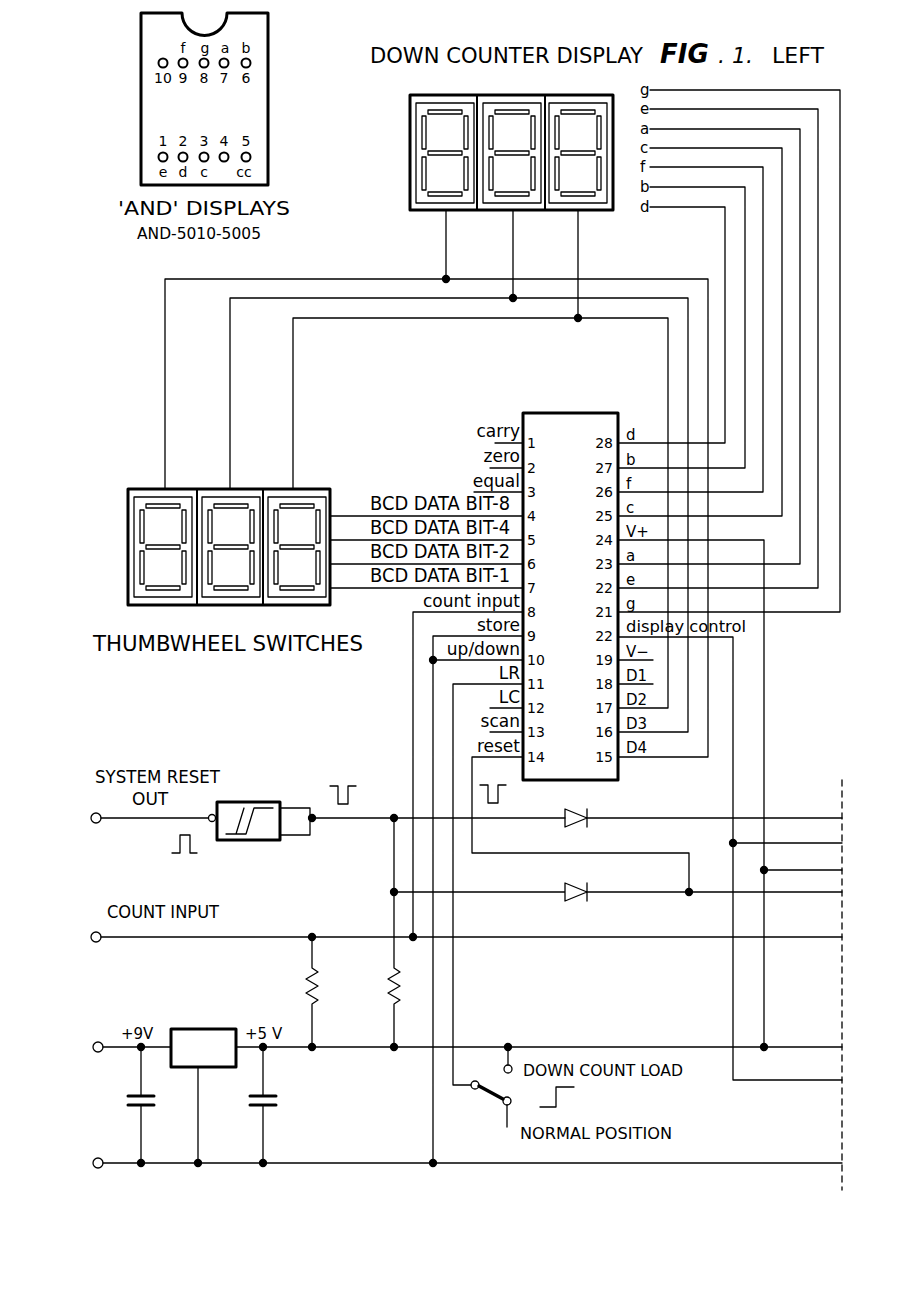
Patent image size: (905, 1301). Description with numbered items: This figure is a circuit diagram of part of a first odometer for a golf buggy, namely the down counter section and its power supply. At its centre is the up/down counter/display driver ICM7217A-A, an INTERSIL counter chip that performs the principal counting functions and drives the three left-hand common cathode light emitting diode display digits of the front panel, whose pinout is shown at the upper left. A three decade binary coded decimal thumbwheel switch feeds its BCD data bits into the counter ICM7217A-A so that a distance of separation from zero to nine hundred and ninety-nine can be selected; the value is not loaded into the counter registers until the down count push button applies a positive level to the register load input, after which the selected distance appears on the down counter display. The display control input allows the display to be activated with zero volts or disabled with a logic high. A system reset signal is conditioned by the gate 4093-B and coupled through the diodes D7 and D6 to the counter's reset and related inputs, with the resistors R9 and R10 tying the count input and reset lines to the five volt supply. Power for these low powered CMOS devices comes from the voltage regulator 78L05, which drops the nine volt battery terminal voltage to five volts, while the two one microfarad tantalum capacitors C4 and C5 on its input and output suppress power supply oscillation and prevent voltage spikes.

The up/down counter/display driver ICM7217A-A is at (563, 573).
The Schmitt trigger NAND gate 4093-B is at (251, 827).
The diode IN914A D7 is at (694, 819).
The diode IN914A D6 is at (618, 894).
The resistor 47K R9 is at (293, 992).
The resistor 47K R10 is at (376, 932).
The three terminal voltage regulator 78L05 is at (203, 1048).
The tantalum capacitor C4 is at (143, 1105).
The tantalum capacitor C5 is at (267, 1105).